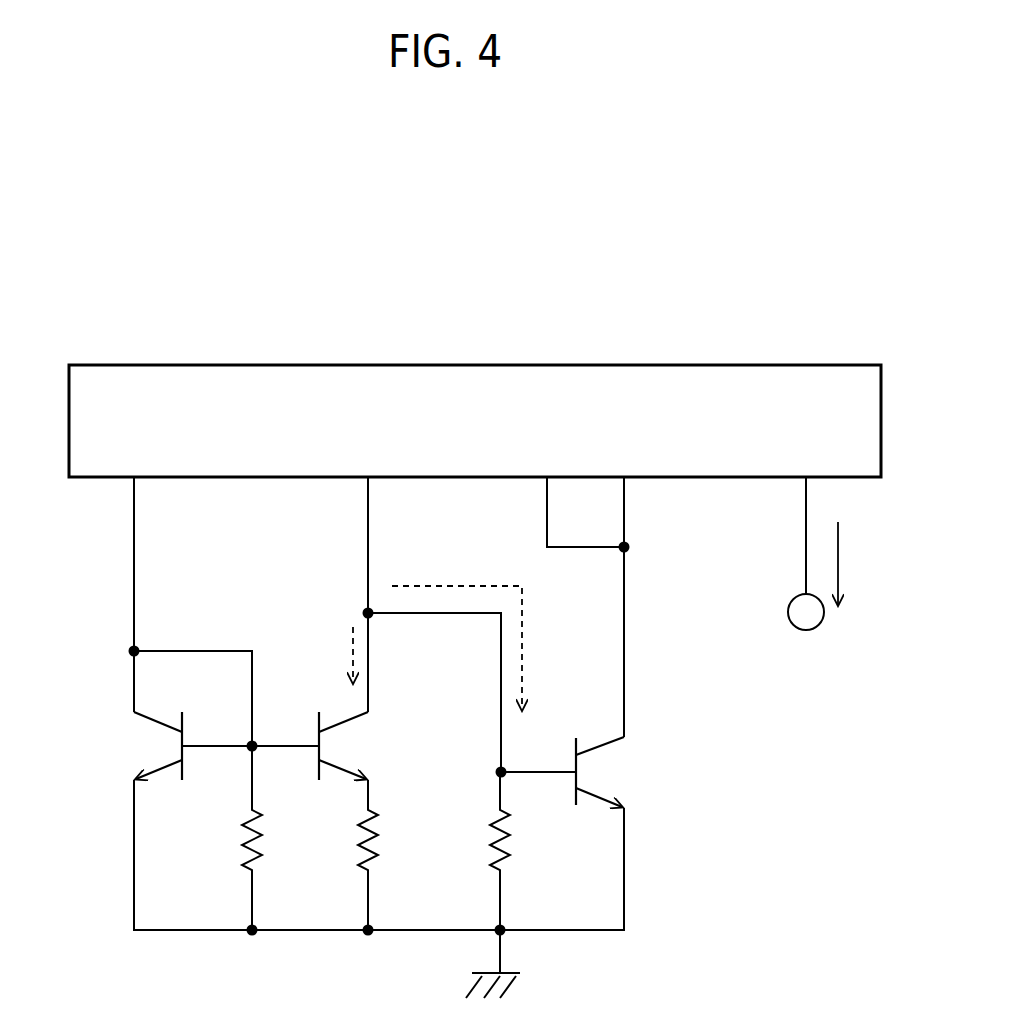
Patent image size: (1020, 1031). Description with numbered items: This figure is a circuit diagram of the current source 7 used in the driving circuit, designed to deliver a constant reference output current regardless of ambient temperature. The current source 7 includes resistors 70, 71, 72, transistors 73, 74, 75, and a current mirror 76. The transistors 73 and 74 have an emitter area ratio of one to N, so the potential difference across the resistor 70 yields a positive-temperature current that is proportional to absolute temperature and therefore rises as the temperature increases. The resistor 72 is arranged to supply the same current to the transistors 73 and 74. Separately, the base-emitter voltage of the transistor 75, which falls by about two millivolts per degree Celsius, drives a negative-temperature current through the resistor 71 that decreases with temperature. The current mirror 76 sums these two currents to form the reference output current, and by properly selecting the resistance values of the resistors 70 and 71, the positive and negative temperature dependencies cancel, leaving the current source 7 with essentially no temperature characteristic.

The current source 7 is at (625, 280).
The current mirror 76 is at (320, 365).
The transistor 73 is at (145, 742).
The transistor 74 is at (366, 742).
The transistor 75 is at (618, 773).
The resistor 70 is at (358, 833).
The resistor 71 is at (490, 832).
The resistor 72 is at (235, 833).